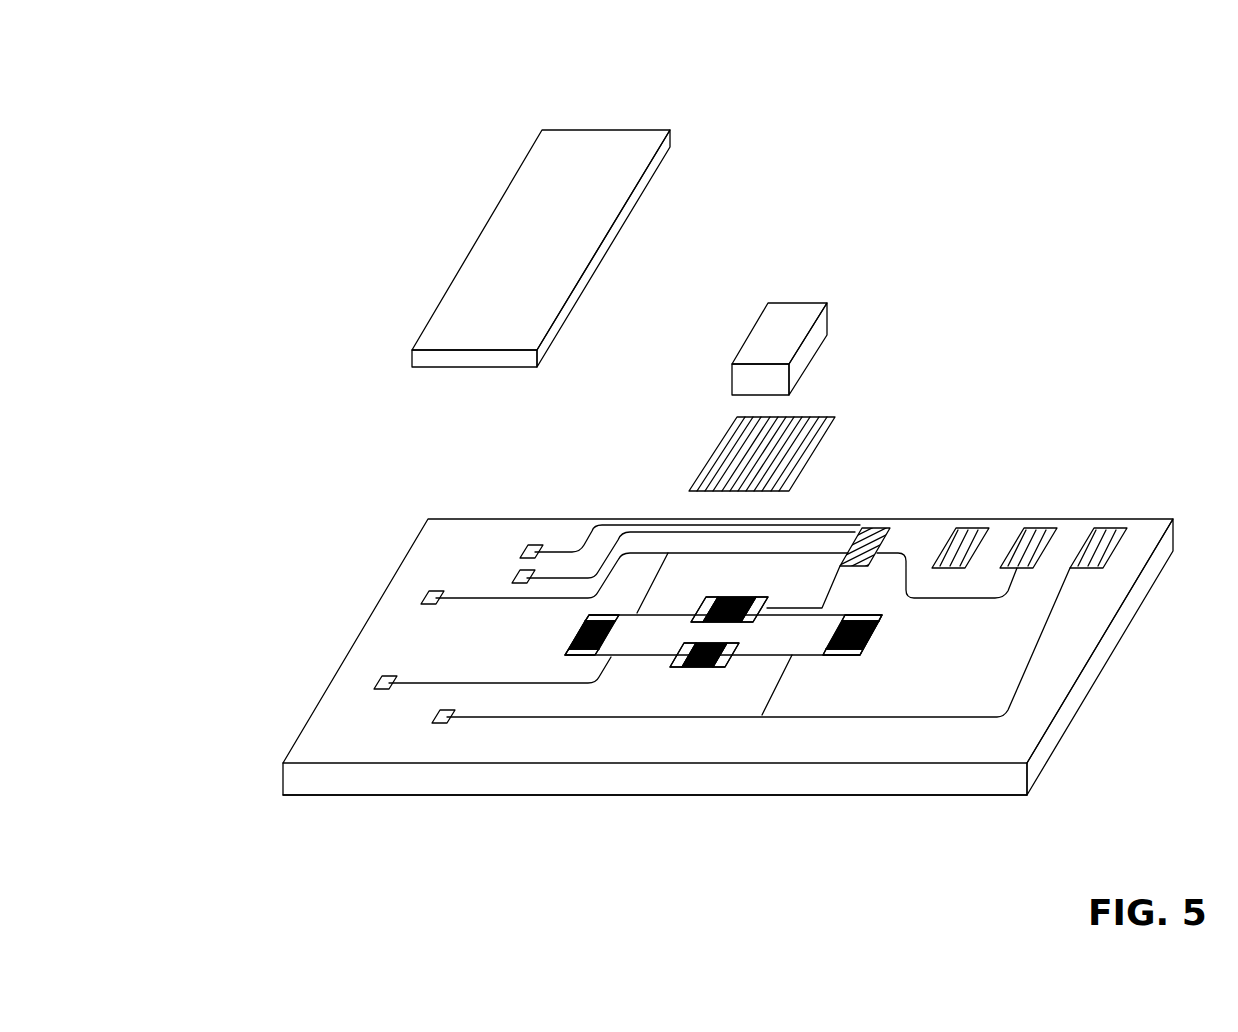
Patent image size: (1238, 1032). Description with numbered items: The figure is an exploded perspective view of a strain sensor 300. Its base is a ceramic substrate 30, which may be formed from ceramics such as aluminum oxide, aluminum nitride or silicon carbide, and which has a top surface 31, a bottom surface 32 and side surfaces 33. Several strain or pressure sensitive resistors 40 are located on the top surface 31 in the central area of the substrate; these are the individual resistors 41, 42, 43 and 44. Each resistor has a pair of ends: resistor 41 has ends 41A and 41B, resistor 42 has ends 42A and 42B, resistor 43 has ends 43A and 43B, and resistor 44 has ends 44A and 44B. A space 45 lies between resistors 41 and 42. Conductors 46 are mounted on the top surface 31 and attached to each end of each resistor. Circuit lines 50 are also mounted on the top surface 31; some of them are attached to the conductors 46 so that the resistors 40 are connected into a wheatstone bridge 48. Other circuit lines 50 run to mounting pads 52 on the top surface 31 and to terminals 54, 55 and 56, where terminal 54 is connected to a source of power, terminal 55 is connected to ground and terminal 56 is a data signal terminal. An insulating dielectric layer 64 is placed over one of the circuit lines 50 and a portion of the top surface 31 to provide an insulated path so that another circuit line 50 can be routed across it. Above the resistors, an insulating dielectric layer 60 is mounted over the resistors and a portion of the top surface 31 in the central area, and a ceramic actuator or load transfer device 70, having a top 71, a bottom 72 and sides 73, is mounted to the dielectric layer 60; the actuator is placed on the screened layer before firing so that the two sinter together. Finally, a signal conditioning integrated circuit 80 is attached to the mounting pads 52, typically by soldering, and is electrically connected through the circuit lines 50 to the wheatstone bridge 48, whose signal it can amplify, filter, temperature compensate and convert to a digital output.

The strain sensor 300 is at (326, 97).
The integrated circuit 80 is at (522, 320).
The ceramic actuator 70 is at (796, 306).
The top 71 is at (773, 333).
The bottom 72 is at (817, 357).
The sides 73 is at (752, 380).
The insulating dielectric layer 60 is at (727, 438).
The insulating dielectric layer 64 is at (903, 533).
The strain or pressure sensitive resistors 40 is at (545, 452).
The space 45 is at (727, 633).
The resistor 41 is at (680, 679).
The end 41A is at (680, 668).
The end 41B is at (708, 670).
The resistor 42 is at (778, 557).
The end 42A is at (723, 598).
The end 42B is at (746, 597).
The resistor 43 is at (535, 635).
The end 43A is at (590, 618).
The end 43B is at (572, 643).
The resistor 44 is at (898, 639).
The end 44A is at (883, 618).
The end 44B is at (867, 643).
The conductors 46 is at (792, 607).
The circuit lines 50 is at (578, 547).
The mounting pads 52 is at (424, 595).
The terminal 54 is at (963, 530).
The terminal 55 is at (1030, 530).
The terminal 56 is at (1105, 530).
The ceramic substrate 30 is at (682, 639).
The top surface 31 is at (332, 702).
The bottom surface 32 is at (560, 773).
The side surfaces 33 is at (508, 783).
The wheatstone bridge 48 is at (808, 818).